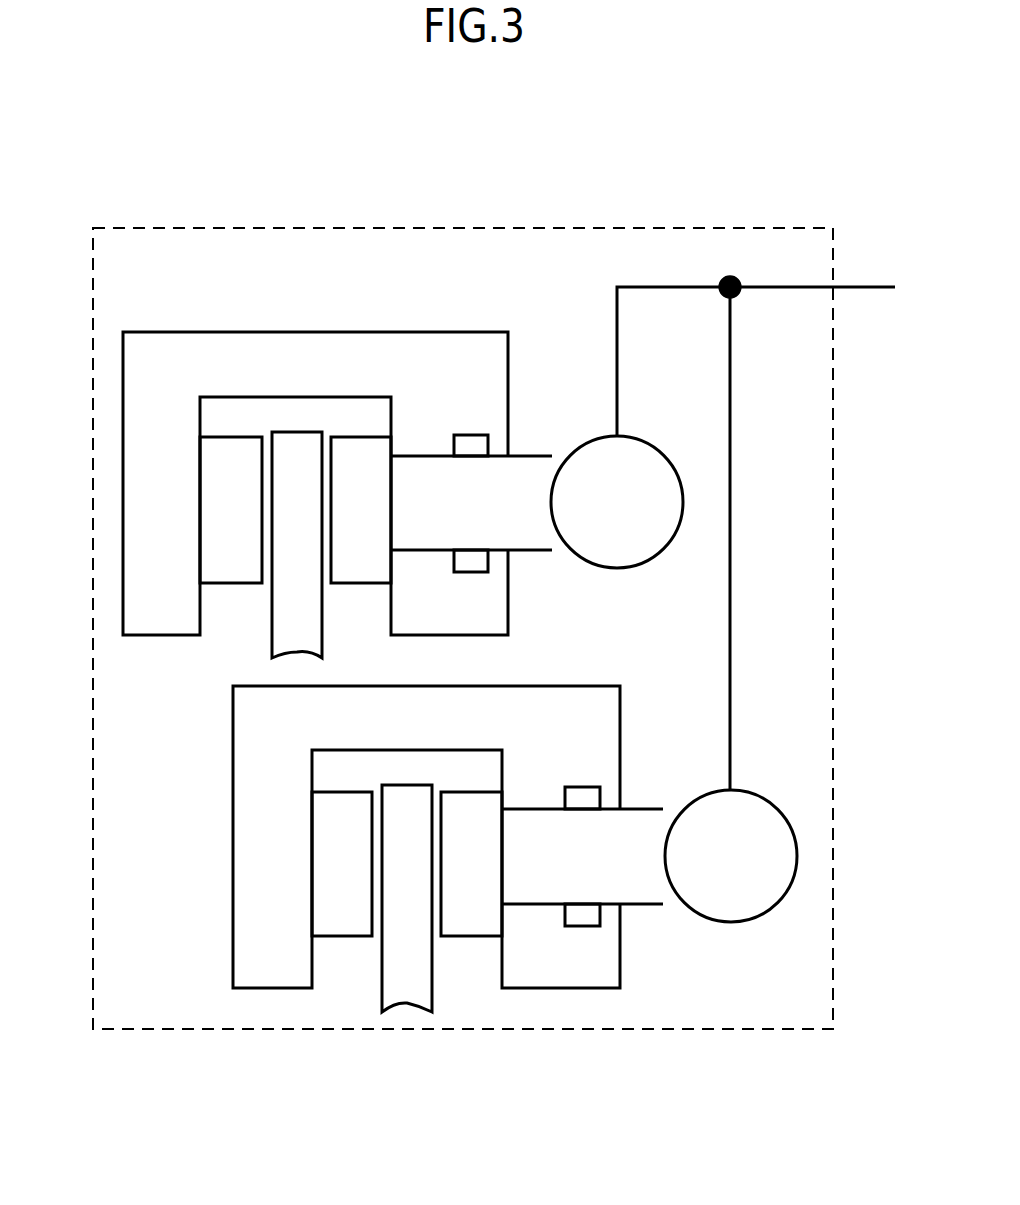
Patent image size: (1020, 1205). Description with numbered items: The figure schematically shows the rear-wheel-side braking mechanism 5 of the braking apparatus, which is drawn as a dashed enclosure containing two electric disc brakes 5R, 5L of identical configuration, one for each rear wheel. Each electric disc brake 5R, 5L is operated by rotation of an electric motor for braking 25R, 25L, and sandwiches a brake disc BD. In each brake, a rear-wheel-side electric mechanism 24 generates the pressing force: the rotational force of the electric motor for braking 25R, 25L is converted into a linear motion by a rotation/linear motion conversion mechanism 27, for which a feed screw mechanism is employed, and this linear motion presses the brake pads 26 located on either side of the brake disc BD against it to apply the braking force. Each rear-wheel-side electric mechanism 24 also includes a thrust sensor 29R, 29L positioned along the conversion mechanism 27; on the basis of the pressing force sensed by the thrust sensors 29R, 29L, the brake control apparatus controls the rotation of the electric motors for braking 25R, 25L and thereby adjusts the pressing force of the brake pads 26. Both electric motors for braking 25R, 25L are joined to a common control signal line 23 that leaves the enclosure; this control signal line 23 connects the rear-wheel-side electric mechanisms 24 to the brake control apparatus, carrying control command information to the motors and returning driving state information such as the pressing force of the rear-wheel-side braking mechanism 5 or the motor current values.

The rear-wheel-side braking mechanism 5 is at (268, 226).
The electric disc brake 5R is at (122, 468).
The electric disc brake 5L is at (232, 818).
The control signal line 23 is at (760, 520).
The rear-wheel-side electric mechanism 24 is at (392, 330).
The electric motor for braking 25R is at (618, 570).
The electric motor for braking 25L is at (732, 922).
The brake pad 26 is at (365, 437).
The rotation/linear motion conversion mechanism 27 is at (545, 555).
The thrust sensor 29R is at (470, 433).
The thrust sensor 29L is at (585, 787).
The brake disc BD is at (296, 432).